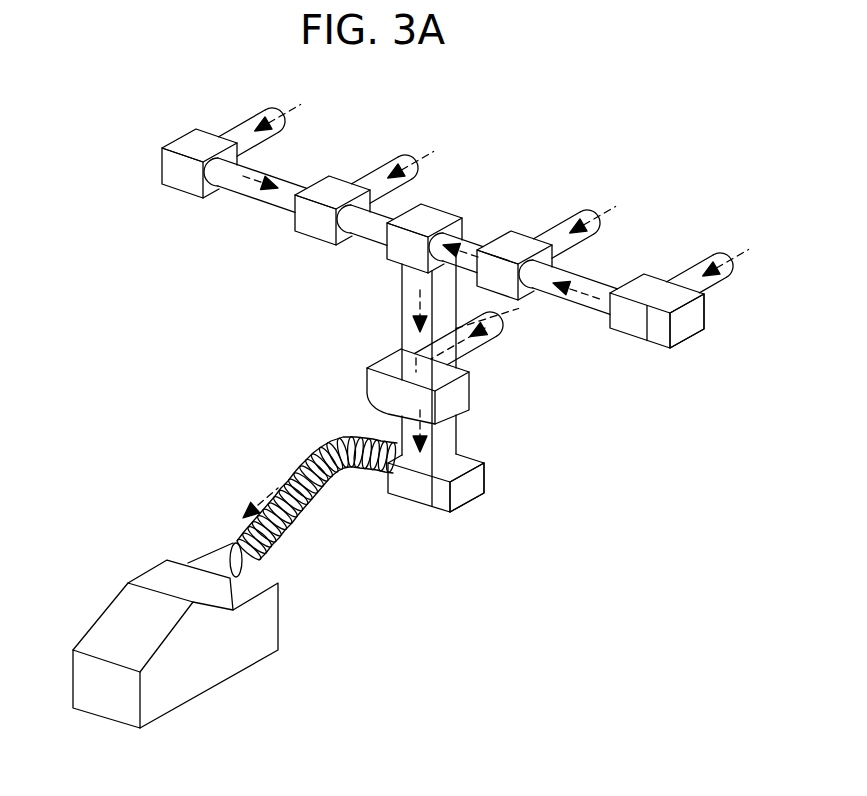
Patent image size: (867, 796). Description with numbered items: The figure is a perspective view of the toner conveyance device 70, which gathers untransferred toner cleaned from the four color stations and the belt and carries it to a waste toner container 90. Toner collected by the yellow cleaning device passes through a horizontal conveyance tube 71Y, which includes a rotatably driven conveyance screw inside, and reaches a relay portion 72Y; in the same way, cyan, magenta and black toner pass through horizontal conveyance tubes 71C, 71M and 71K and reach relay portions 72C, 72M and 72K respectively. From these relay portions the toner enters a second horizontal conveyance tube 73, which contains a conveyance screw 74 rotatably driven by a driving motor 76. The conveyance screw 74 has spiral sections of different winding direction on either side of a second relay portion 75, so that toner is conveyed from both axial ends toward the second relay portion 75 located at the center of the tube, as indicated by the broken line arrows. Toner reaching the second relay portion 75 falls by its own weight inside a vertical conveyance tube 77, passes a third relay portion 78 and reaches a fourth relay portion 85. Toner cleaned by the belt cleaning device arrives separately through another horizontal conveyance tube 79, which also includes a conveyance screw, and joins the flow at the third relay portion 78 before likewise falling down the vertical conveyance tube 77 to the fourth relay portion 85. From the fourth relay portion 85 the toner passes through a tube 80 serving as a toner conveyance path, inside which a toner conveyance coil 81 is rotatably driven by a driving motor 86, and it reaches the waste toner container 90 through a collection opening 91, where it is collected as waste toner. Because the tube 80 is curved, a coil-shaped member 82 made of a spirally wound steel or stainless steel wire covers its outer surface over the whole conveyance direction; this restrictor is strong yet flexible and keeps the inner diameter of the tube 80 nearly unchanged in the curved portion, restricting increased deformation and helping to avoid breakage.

The toner conveyance device 70 is at (613, 172).
The horizontal conveyance tube 71K is at (243, 128).
The horizontal conveyance tube 71M is at (373, 177).
The horizontal conveyance tube 71C is at (553, 222).
The horizontal conveyance tube 71Y is at (687, 257).
The relay portion 72K is at (180, 188).
The relay portion 72M is at (313, 227).
The relay portion 72C is at (510, 240).
The relay portion 72Y is at (627, 323).
The second horizontal conveyance tube 73 is at (254, 203).
The conveyance screw 74 is at (258, 192).
The second relay portion 75 is at (437, 217).
The driving motor 76 is at (680, 330).
The vertical conveyance tube 77 is at (408, 303).
The third relay portion 78 is at (390, 357).
The horizontal conveyance tube 79 is at (482, 337).
The tube 80 is at (316, 507).
The toner conveyance coil 81 is at (283, 537).
The coil-shaped member 82 is at (300, 470).
The fourth relay portion 85 is at (423, 495).
The driving motor 86 is at (468, 493).
The waste toner container 90 is at (223, 673).
The collection opening 91 is at (232, 545).